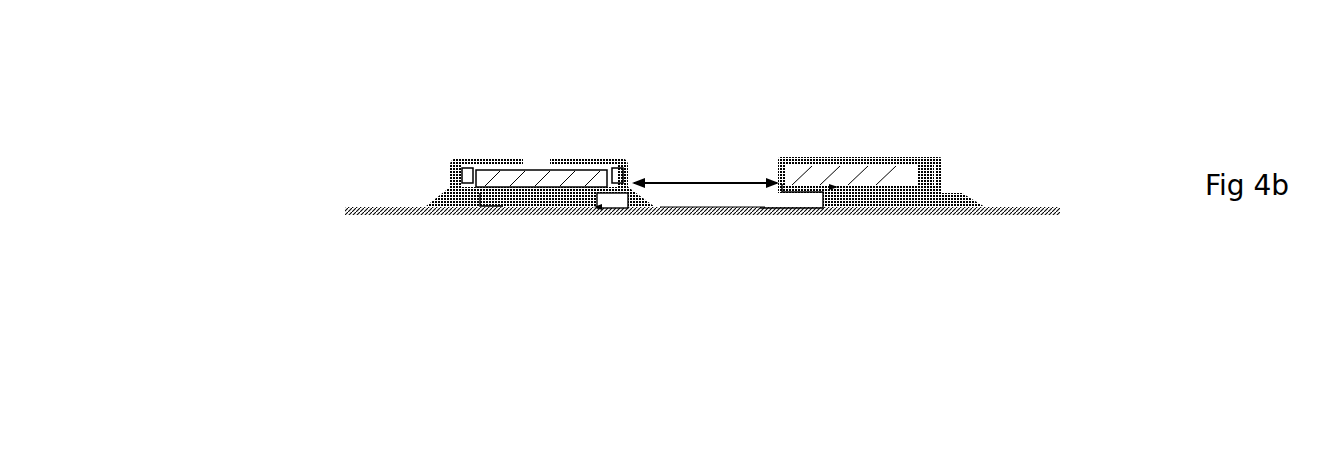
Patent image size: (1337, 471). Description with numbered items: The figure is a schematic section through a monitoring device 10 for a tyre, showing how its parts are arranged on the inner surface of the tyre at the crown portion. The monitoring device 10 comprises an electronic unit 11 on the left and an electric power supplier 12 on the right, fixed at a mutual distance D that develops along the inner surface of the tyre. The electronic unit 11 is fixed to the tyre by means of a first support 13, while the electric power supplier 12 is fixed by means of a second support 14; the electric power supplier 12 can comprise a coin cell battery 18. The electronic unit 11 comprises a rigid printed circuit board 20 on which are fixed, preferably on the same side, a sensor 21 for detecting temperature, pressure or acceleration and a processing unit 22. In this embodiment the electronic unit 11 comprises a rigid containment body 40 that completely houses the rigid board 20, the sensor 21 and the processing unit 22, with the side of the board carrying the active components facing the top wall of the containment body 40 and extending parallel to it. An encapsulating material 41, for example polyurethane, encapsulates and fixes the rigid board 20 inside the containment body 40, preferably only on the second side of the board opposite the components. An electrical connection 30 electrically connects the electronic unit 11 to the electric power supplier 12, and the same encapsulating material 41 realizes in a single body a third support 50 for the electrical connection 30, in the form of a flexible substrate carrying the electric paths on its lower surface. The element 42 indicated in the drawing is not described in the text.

The monitoring device 10 is at (256, 78).
The electronic unit 11 is at (520, 163).
The electric power supplier 12 is at (906, 157).
The first support 13 is at (403, 210).
The second support 14 is at (878, 204).
The coin cell battery 18 is at (888, 171).
The rigid printed circuit board 20 is at (566, 192).
The sensor 21 is at (510, 181).
The processing unit 22 is at (588, 180).
The electrical connection 30 is at (728, 197).
The rigid containment body 40 is at (538, 157).
The encapsulating material 41 is at (517, 208).
The block of second component 42 is at (917, 173).
The third support 50 is at (700, 211).
The mutual distance D is at (768, 180).